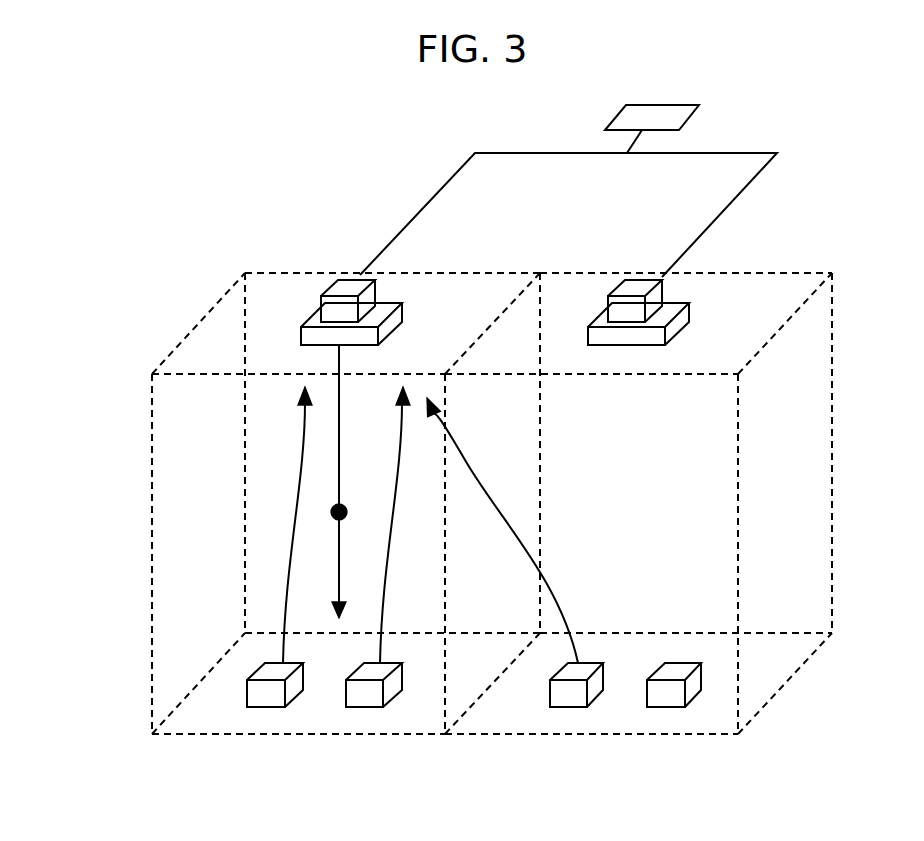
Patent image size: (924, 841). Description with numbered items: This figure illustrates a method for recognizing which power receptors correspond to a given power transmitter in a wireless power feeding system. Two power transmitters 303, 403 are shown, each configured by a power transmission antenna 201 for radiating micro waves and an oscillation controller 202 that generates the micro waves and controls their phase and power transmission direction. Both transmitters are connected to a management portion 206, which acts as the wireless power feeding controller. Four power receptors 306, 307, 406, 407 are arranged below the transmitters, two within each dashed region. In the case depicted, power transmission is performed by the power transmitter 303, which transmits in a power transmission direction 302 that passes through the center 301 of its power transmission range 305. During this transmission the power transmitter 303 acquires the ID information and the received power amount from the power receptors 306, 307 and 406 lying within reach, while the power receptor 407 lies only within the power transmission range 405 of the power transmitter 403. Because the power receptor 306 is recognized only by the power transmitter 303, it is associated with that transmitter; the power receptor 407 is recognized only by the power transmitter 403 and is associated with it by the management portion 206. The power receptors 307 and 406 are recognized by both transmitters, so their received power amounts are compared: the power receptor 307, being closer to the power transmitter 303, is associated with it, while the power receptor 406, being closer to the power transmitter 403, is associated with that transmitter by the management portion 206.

The power transmission antenna 201 is at (311, 318).
The oscillation controller 202 is at (491, 268).
The management portion 206 is at (693, 117).
The center 301 is at (339, 512).
The power transmission direction 302 is at (339, 413).
The power transmitter 303 is at (473, 259).
The power transmission range 305 is at (152, 410).
The power receptor 306 is at (275, 707).
The power receptor 307 is at (373, 707).
The power transmitter 403 is at (663, 216).
The power transmission range 405 is at (832, 353).
The power receptor 406 is at (570, 707).
The power receptor 407 is at (668, 707).